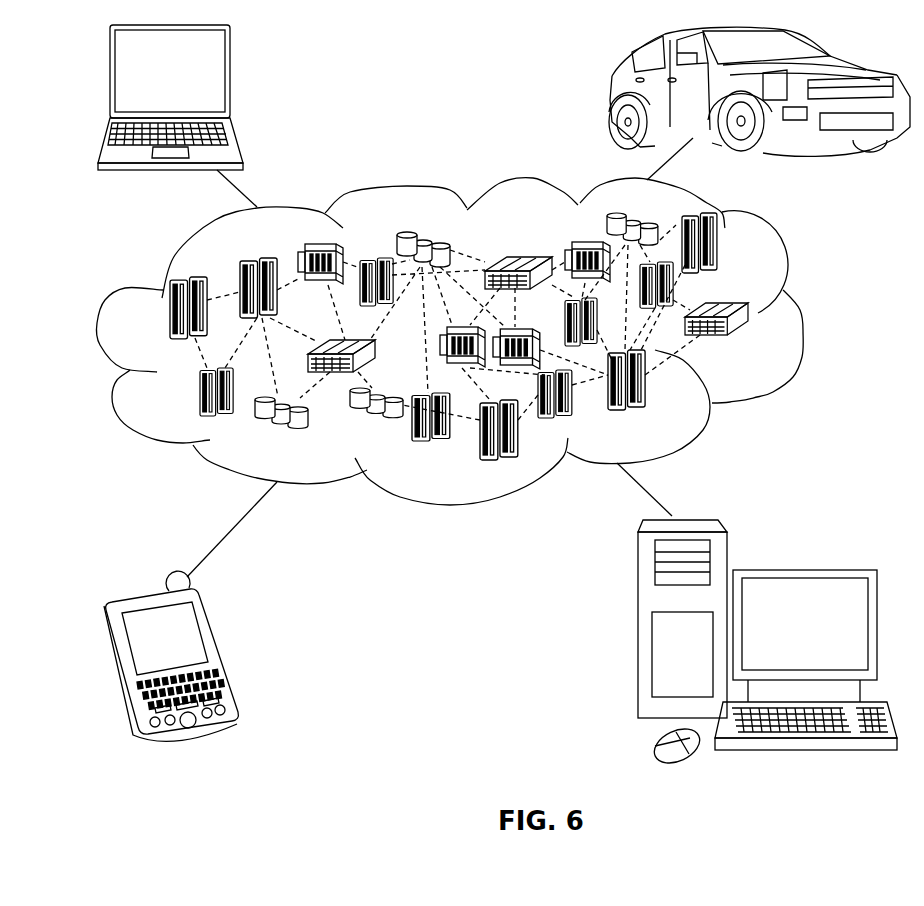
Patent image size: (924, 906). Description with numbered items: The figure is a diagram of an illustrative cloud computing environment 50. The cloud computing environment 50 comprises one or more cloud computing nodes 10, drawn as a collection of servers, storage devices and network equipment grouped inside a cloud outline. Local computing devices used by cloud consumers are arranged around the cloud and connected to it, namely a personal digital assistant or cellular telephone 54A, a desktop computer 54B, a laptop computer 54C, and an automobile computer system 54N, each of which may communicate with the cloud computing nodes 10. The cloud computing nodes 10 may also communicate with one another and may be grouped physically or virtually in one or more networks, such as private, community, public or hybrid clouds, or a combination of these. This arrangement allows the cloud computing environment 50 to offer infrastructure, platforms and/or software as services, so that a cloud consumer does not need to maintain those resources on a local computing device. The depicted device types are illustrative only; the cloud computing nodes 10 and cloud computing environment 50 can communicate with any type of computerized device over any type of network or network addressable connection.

The cloud computing node 10 is at (752, 342).
The cloud computing environment 50 is at (805, 317).
The personal digital assistant or cellular telephone 54A is at (222, 648).
The desktop computer 54B is at (802, 567).
The laptop computer 54C is at (230, 80).
The automobile computer system 54N is at (610, 92).